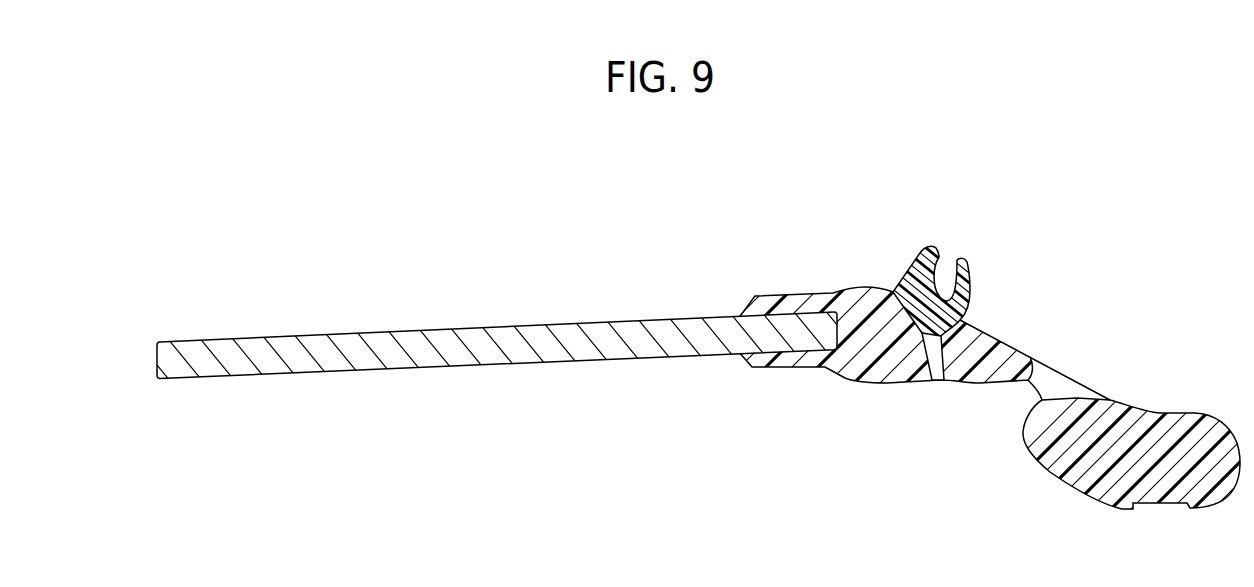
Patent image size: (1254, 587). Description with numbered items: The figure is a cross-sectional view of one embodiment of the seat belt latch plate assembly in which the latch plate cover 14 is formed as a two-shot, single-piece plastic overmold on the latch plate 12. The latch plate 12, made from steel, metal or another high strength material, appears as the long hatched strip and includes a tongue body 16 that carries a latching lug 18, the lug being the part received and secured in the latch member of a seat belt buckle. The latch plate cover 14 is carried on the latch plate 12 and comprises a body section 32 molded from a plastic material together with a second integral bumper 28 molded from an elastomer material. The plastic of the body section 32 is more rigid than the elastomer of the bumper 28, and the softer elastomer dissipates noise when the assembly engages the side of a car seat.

The latch plate 12 is at (200, 313).
The latch plate cover 14 is at (943, 218).
The tongue body 16 is at (588, 323).
The latching lug 18 is at (197, 360).
The second integral bumper 28 is at (966, 288).
The body section 32 is at (857, 368).